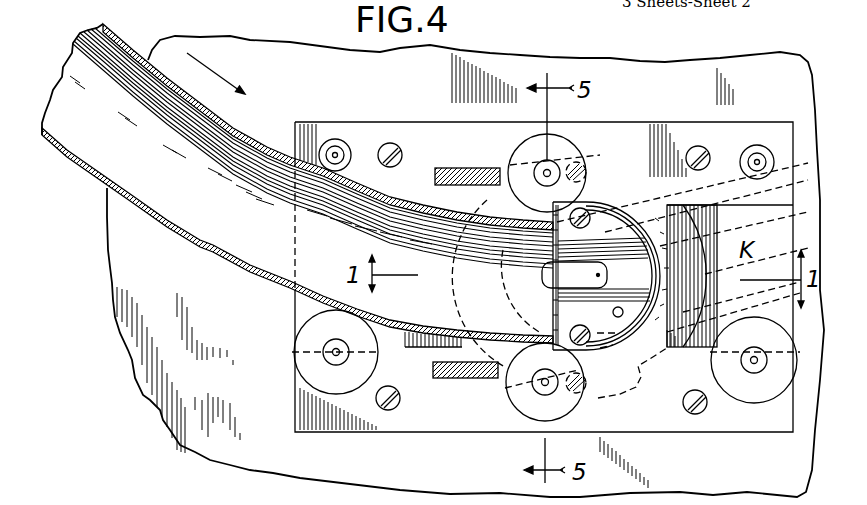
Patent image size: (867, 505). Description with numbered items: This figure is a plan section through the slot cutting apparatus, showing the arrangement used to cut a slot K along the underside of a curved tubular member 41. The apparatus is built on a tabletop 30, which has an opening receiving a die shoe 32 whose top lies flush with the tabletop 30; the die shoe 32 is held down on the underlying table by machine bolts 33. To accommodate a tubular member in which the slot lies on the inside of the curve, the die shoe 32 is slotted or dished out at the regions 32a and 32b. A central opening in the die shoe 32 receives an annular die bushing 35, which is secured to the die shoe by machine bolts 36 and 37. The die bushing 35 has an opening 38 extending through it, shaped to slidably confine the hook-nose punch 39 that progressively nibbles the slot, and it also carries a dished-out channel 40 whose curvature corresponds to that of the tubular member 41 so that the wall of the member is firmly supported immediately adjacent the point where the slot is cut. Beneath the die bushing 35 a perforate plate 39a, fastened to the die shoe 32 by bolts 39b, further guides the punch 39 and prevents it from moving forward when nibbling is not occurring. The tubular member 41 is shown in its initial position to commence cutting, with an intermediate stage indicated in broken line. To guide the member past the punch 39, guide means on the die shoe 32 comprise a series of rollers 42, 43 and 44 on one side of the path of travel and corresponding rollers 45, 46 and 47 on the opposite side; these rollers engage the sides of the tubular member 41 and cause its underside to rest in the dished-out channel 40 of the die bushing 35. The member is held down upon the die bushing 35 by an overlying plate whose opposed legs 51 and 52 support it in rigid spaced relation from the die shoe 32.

The tabletop 30 is at (673, 68).
The die shoe 32 is at (389, 418).
The slotted or dished-out portion of die shoe 32a is at (410, 339).
The slotted or dished-out portion of die shoe 32b is at (640, 385).
The machine bolts 33 is at (398, 146).
The annular die bushing 35 is at (607, 335).
The machine bolt 36 is at (577, 245).
The machine bolt 37 is at (586, 345).
The opening 38 is at (590, 262).
The hook-nose punch 39 is at (566, 290).
The perforate plate 39a is at (629, 430).
The bolts 39b is at (583, 385).
The dished-out channel 40 is at (660, 246).
The tubular member 41 is at (182, 241).
The roller 42 is at (346, 144).
The roller 43 is at (583, 157).
The roller 44 is at (750, 146).
The roller 45 is at (295, 365).
The roller 46 is at (523, 403).
The roller 47 is at (760, 398).
The leg 51 is at (480, 145).
The leg 52 is at (470, 379).